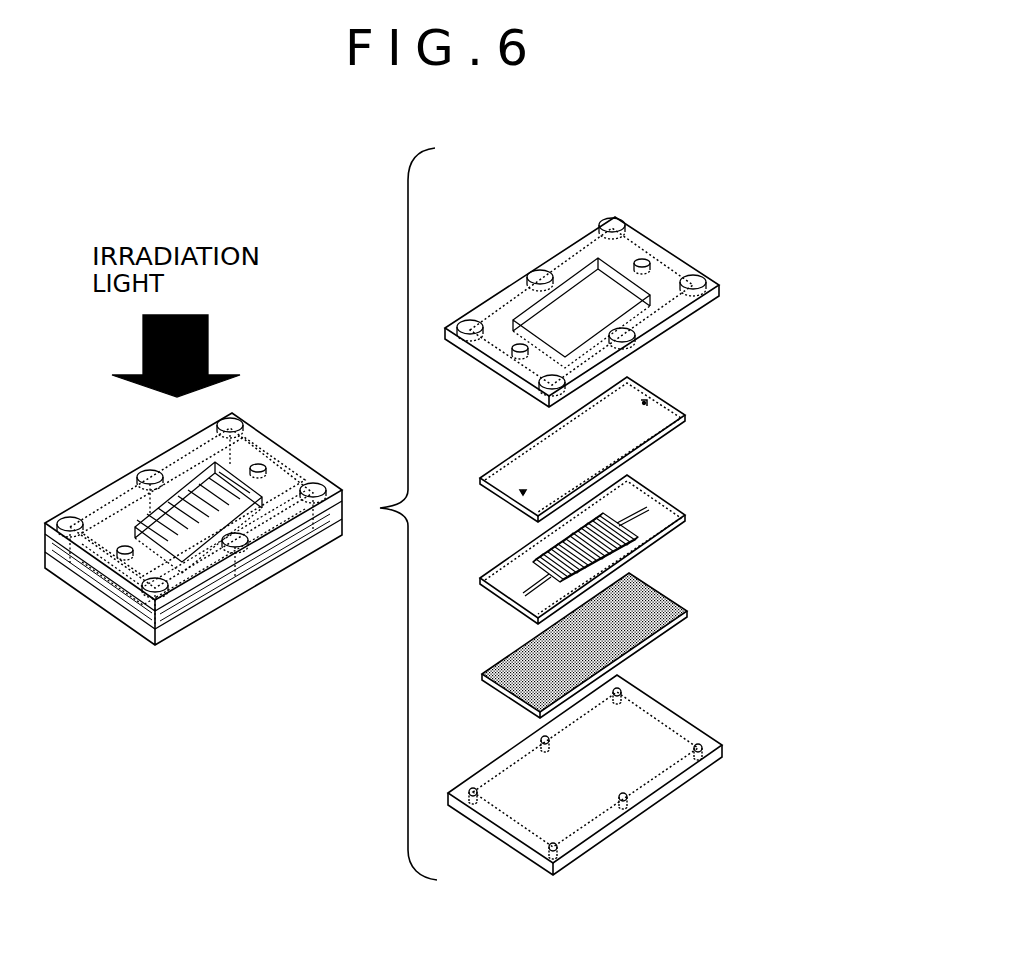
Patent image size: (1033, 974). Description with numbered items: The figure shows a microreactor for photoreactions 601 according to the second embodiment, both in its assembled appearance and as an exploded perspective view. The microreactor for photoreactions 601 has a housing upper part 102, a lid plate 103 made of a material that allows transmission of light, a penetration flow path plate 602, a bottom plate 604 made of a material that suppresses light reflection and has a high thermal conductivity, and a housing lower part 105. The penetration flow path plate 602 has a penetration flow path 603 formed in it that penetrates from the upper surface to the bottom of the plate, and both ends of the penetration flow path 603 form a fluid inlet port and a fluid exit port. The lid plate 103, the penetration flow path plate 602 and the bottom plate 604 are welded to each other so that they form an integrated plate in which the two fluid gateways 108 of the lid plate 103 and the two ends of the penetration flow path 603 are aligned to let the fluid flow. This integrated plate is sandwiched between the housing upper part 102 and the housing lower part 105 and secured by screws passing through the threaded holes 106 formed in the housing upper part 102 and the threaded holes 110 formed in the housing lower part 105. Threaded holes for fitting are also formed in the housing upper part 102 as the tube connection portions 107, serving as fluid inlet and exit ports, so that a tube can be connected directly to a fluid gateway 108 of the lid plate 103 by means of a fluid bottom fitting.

The microreactor for photoreactions 601 is at (257, 412).
The housing upper part 102 is at (714, 303).
The threaded holes 106 is at (612, 222).
The tube connection portions 107 is at (650, 265).
The lid plate 103 is at (687, 413).
The fluid gateway 108 is at (655, 402).
The penetration flow path plate 602 is at (687, 522).
The penetration flow path 603 is at (632, 553).
The bottom plate 604 is at (657, 633).
The housing lower part 105 is at (690, 778).
The threaded holes 110 is at (627, 798).